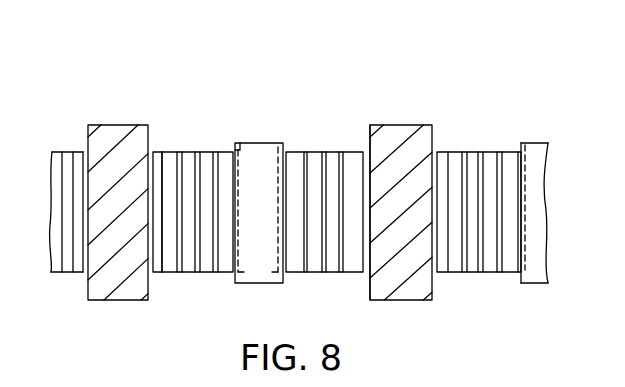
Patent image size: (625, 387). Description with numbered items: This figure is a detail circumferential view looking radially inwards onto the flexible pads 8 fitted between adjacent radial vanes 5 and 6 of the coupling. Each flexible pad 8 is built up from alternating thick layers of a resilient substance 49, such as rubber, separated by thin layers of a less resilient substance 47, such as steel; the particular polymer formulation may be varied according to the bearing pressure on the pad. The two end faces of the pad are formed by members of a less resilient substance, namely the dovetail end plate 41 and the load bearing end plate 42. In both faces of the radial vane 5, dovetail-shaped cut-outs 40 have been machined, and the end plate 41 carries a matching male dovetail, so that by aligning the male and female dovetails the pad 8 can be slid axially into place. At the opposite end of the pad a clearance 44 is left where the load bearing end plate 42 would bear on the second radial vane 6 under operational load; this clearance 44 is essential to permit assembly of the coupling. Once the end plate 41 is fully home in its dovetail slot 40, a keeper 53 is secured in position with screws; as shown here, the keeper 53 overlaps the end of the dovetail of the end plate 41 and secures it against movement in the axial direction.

The flexible pad 8 is at (181, 214).
The load bearing end plate 42 is at (163, 160).
The thin layer of less resilient substance 47 is at (179, 156).
The thick layer of resilient substance 49 is at (206, 170).
The keeper 53 is at (237, 150).
The radial vane 5 is at (257, 160).
The dovetail-shaped cut-out 40 is at (278, 188).
The clearance 44 is at (368, 160).
The second radial vane 6 is at (396, 152).
The dovetail end plate 41 is at (522, 177).